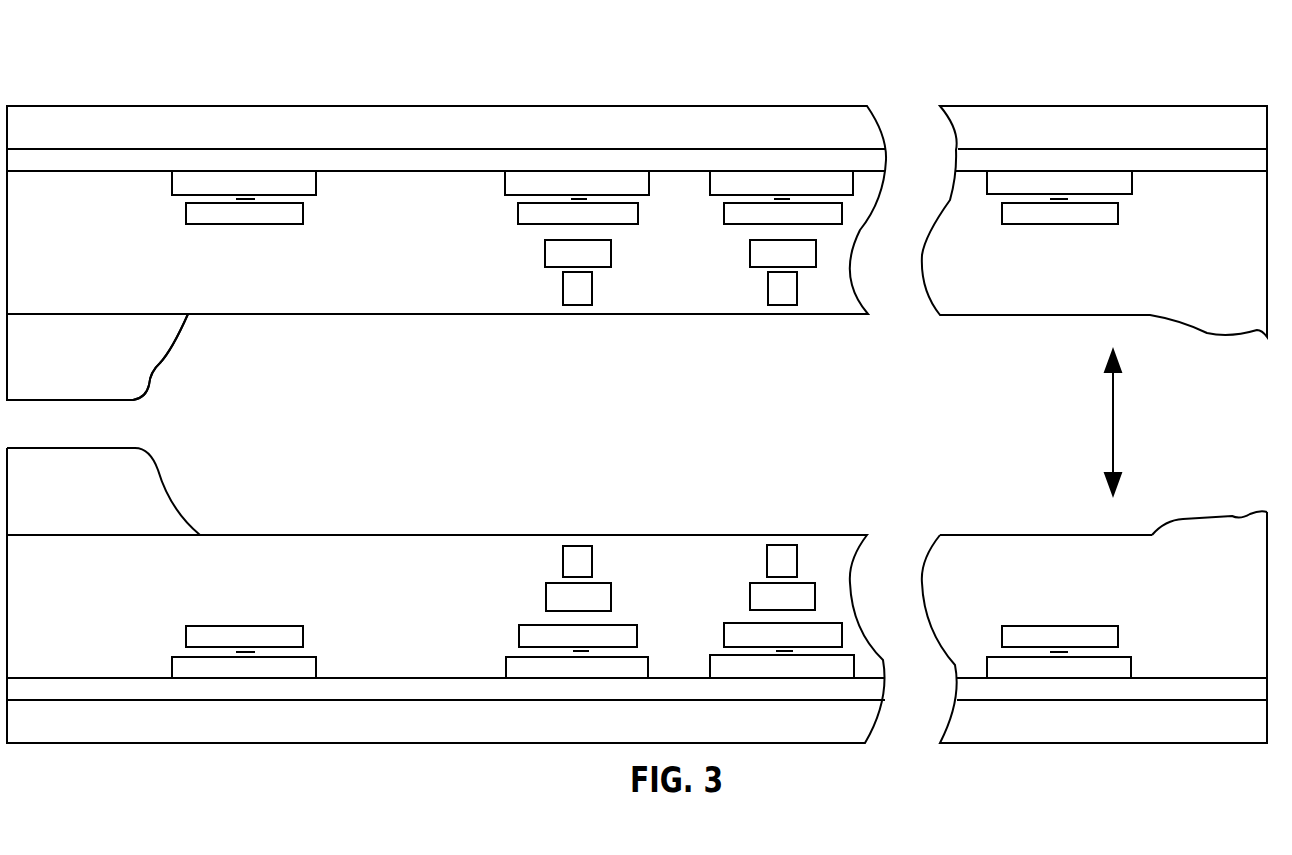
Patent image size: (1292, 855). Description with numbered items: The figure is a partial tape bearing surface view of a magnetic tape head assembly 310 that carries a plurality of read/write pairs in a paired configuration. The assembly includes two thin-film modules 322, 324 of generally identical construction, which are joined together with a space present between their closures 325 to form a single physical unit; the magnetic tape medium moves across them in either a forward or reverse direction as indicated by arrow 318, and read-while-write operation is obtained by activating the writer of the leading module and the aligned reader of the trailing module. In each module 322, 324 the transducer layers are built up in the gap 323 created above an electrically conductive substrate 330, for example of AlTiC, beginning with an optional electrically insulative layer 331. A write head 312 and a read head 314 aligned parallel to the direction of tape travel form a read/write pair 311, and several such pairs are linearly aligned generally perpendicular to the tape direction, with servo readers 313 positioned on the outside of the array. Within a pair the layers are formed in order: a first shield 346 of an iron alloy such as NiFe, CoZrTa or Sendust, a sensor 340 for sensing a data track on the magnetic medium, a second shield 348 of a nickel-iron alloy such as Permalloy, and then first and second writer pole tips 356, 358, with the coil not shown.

The magnetic tape head assembly 310 is at (82, 78).
The read/write pair 311 is at (549, 553).
The write head 312 is at (581, 577).
The servo reader 313 is at (303, 622).
The read head 314 is at (549, 630).
The arrow indicating direction of tape travel 318 is at (1113, 430).
The thin-film module 322 is at (1147, 106).
The gap 323 is at (315, 315).
The thin-film module 324 is at (1135, 743).
The closure 325 is at (163, 362).
The substrate 330 is at (195, 138).
The electrically insulative layer 331 is at (1245, 662).
The sensor 340 is at (515, 651).
The first shield 346 is at (506, 667).
The second shield 348 is at (519, 633).
The first writer pole tip 356 is at (546, 600).
The second writer pole tip 358 is at (563, 576).